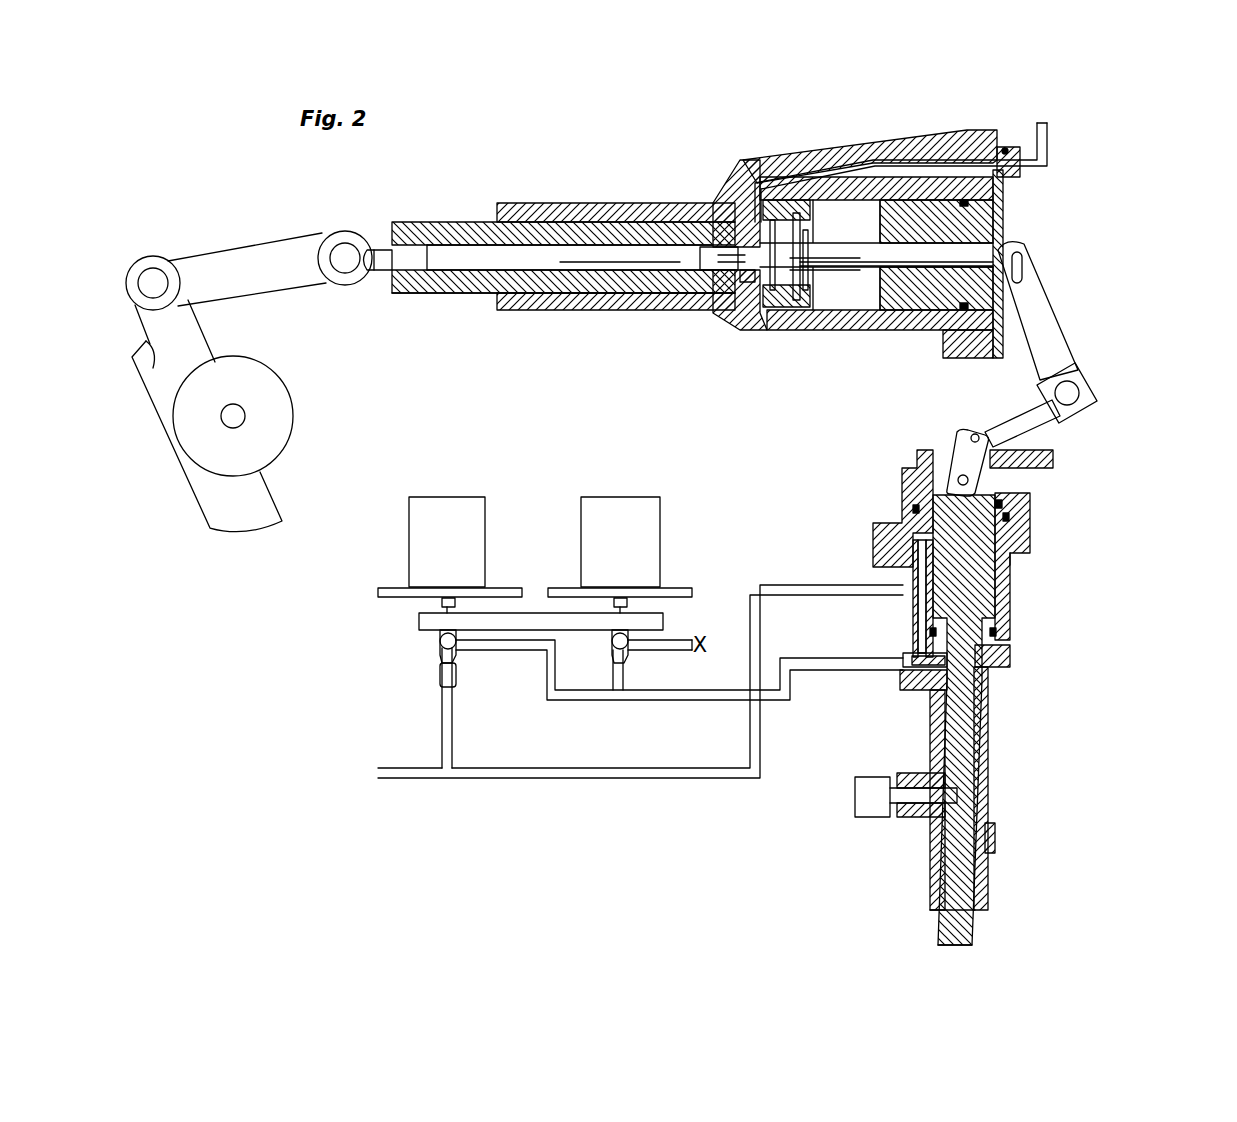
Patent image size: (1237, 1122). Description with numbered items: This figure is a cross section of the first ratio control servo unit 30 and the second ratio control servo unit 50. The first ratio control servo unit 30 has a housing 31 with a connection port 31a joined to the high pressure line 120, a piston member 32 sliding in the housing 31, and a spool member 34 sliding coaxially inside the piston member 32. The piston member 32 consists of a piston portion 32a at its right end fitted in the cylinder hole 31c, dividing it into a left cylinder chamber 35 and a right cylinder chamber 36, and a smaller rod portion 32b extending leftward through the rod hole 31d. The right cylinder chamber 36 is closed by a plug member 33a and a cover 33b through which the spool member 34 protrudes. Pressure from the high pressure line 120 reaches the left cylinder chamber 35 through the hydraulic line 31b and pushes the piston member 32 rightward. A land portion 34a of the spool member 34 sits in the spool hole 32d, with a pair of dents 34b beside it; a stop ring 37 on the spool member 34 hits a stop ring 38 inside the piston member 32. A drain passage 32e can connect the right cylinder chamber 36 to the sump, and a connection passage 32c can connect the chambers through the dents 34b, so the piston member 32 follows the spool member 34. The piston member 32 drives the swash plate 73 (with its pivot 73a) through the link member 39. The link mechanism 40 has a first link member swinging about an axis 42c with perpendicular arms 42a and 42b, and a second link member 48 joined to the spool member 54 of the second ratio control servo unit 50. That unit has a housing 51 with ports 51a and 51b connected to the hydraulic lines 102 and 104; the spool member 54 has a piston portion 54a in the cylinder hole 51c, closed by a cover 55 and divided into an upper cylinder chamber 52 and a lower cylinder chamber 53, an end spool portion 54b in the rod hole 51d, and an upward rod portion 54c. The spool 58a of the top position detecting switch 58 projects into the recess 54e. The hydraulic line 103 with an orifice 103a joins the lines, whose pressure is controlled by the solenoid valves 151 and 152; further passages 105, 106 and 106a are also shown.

The first ratio control servo unit 30 is at (683, 128).
The housing 31 is at (575, 204).
The connection port 31a is at (1004, 147).
The hydraulic line 31b is at (862, 163).
The cylinder hole 31c is at (880, 330).
The rod hole 31d is at (572, 294).
The piston member 32 is at (430, 222).
The piston portion 32a is at (765, 320).
The rod portion 32b is at (480, 295).
The connection passage 32c is at (712, 204).
The spool hole 32d is at (614, 265).
The drain passage 32e is at (725, 300).
The plug member 33a is at (1005, 212).
The cover 33b is at (1005, 182).
The spool member 34 is at (810, 292).
The land portion 34a is at (698, 262).
The dents 34b is at (727, 200).
The left cylinder chamber 35 is at (750, 300).
The right cylinder chamber 36 is at (833, 228).
The stop ring 37 is at (796, 300).
The stop ring 38 is at (803, 292).
The link member 39 is at (246, 250).
The link mechanism 40 is at (1092, 348).
The arm 42a is at (1050, 312).
The arm 42b is at (1017, 425).
The axis 42c is at (1043, 393).
The second link member 48 is at (963, 443).
The second ratio control servo unit 50 is at (1058, 677).
The housing 51 is at (1010, 614).
The port 51a is at (905, 575).
The port 51b is at (900, 676).
The cylinder hole 51c is at (1000, 570).
The rod hole 51d is at (978, 712).
The upper cylinder chamber 52 is at (913, 610).
The lower cylinder chamber 53 is at (905, 652).
The spool member 54 is at (975, 600).
The piston portion 54a is at (1002, 646).
The end spool portion 54b is at (968, 752).
The rod portion 54c is at (966, 500).
The recess 54e is at (988, 826).
The cover 55 is at (903, 482).
The top position detecting switch 58 is at (870, 806).
The spool 58a is at (907, 812).
The swash plate 73 is at (255, 530).
The pivot shaft 73a is at (240, 417).
The hydraulic line 102 is at (603, 779).
The hydraulic line 103 is at (441, 720).
The orifice 103a is at (455, 680).
The hydraulic line 104 is at (650, 700).
The branch line 105 is at (616, 676).
The stub line 106 is at (690, 640).
The closed end 106a is at (657, 650).
The high pressure line 120 is at (1048, 140).
The solenoid valve 151 is at (478, 496).
The solenoid valve 152 is at (648, 496).